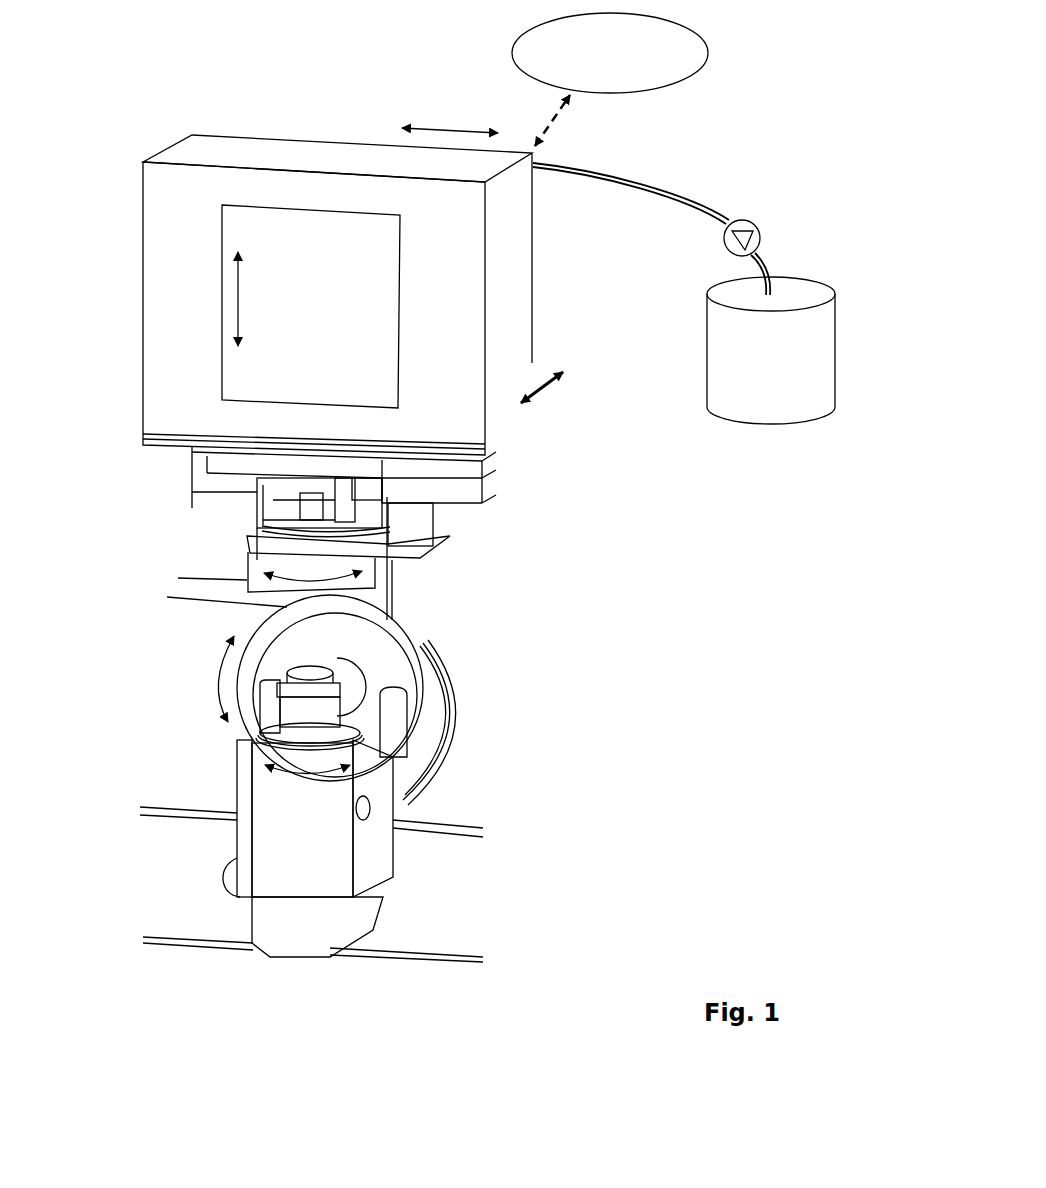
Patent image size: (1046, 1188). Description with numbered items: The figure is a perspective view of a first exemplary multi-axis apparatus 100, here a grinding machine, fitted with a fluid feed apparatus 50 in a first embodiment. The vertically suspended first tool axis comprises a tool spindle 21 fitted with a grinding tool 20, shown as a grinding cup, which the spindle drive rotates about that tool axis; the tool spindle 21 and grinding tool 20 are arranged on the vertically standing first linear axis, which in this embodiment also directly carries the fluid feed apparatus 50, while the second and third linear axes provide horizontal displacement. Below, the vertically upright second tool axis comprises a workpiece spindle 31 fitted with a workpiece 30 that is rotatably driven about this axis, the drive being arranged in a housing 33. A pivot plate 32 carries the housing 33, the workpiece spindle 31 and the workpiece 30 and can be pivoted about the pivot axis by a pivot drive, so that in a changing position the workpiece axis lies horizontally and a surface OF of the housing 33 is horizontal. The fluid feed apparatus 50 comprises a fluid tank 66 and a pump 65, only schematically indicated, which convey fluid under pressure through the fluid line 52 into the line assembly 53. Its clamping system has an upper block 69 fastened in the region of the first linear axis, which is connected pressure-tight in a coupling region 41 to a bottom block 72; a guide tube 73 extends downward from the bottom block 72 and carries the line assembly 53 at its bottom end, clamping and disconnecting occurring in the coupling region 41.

The multi-axis apparatus 100 is at (383, 234).
The fluid feed apparatus 50 is at (730, 143).
The fluid line 52 is at (593, 170).
The pump 65 is at (750, 222).
The fluid tank 66 is at (771, 350).
The upper block 69 is at (485, 463).
The coupling region 41 is at (514, 472).
The bottom block 72 is at (490, 485).
The tool spindle 21 is at (278, 502).
The guide tube 73 is at (428, 523).
The grinding tool 20 is at (250, 563).
The line assembly 53 is at (440, 552).
The pivot plate 32 is at (400, 628).
The workpiece 30 is at (330, 673).
The workpiece spindle 31 is at (330, 713).
The housing 33 is at (275, 836).
The surface of the housing OF is at (235, 787).